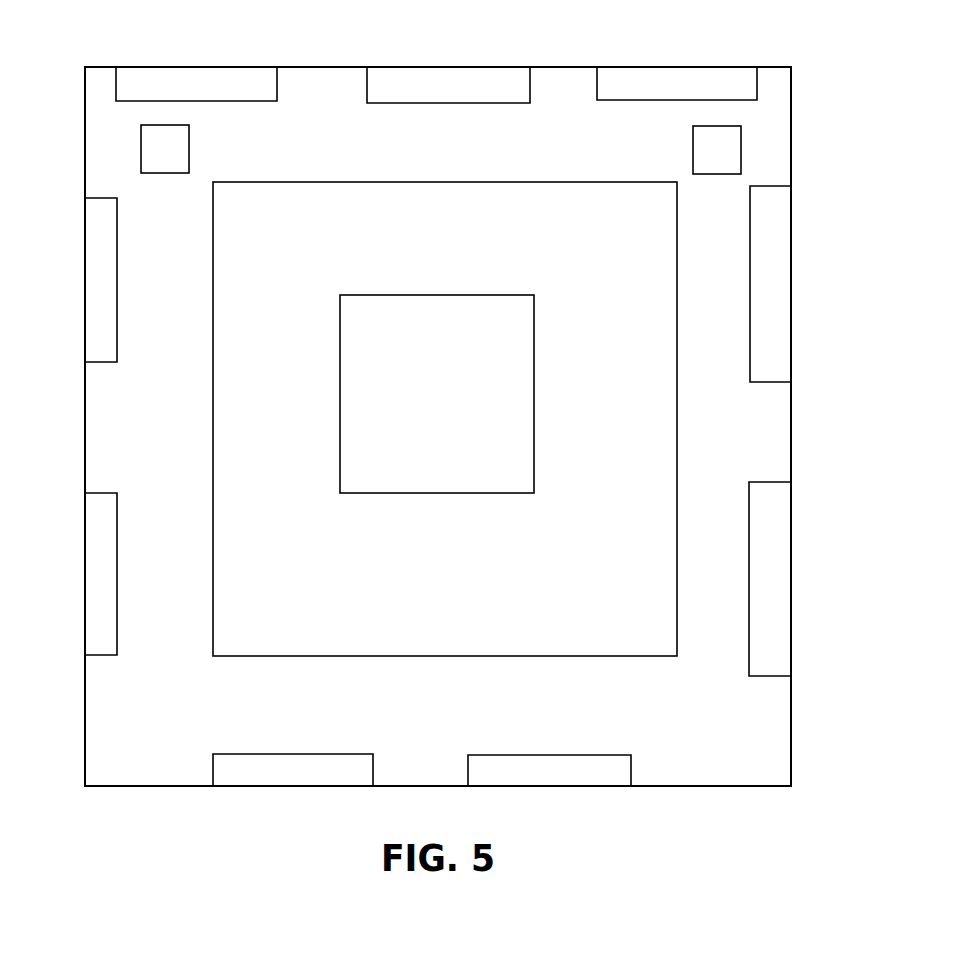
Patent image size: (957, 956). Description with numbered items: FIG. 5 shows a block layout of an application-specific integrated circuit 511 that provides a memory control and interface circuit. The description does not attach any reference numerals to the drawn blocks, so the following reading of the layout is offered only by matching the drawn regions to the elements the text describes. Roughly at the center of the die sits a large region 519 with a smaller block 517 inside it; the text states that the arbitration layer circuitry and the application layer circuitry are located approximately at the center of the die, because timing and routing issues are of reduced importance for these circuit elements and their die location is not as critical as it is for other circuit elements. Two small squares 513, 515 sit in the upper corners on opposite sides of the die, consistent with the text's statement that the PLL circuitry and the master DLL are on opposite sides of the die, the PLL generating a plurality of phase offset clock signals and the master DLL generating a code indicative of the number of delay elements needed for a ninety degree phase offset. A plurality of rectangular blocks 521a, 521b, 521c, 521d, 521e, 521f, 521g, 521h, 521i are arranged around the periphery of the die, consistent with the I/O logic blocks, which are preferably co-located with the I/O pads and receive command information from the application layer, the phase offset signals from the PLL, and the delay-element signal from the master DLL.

The semiconductor package 511 is at (823, 77).
The corner component 513 is at (189, 152).
The corner component 515 is at (693, 159).
The central die 517 is at (469, 412).
The die attach region 519 is at (453, 573).
The peripheral component 521a is at (117, 317).
The peripheral component 521b is at (117, 605).
The peripheral component 521c is at (243, 754).
The peripheral component 521d is at (520, 755).
The peripheral component 521e is at (775, 482).
The peripheral component 521f is at (750, 342).
The peripheral component 521g is at (627, 101).
The peripheral component 521h is at (393, 103).
The peripheral component 521i is at (244, 101).